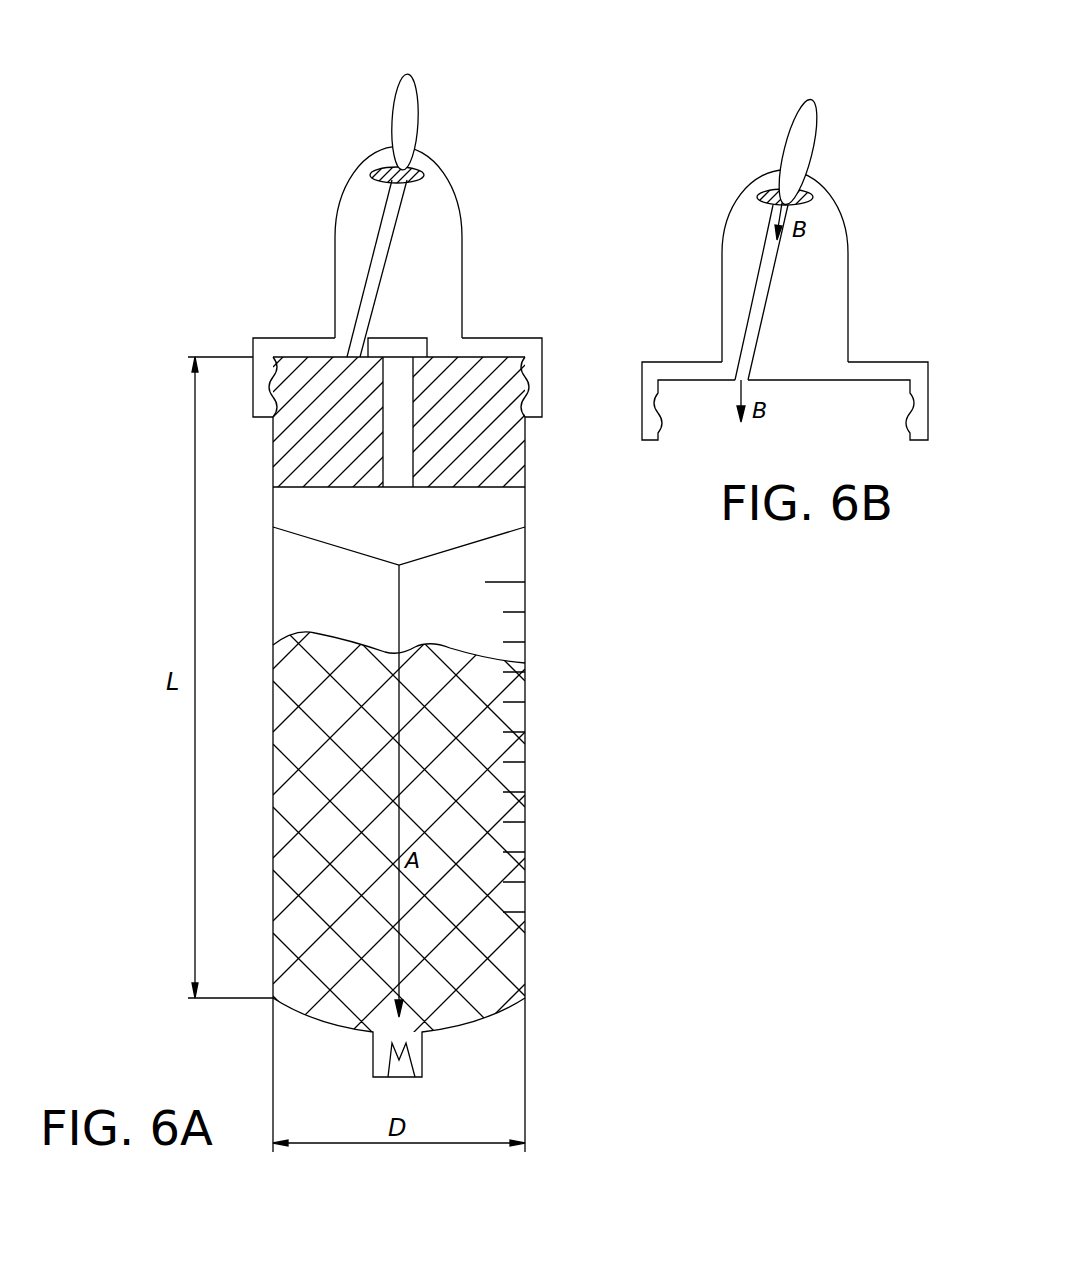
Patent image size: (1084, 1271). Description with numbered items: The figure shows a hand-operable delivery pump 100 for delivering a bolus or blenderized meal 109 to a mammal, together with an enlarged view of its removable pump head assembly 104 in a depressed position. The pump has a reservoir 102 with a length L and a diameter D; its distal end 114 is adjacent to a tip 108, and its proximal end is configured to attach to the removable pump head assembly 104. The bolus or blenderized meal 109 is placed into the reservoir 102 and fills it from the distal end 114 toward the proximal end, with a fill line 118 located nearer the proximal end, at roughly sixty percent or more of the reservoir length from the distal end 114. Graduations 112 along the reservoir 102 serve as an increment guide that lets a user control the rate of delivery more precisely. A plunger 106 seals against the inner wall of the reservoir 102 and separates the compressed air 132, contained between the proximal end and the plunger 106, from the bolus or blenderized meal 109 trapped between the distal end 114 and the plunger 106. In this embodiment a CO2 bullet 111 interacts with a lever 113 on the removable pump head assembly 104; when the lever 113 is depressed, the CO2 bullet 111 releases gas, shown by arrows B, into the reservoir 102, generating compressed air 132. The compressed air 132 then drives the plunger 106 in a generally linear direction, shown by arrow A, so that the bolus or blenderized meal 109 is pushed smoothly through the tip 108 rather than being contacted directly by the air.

In FIG. 6A, the delivery pump 100 is at (105, 345).
In FIG. 6A, the reservoir 102 is at (528, 782).
In FIG. 6A, the removable pump head assembly 104 is at (540, 86).
In FIG. 6B, the removable pump head assembly 104 is at (898, 142).
In FIG. 6A, the plunger 106 is at (510, 513).
In FIG. 6A, the tip 108 is at (397, 1050).
In FIG. 6A, the bolus or blenderized meal 109 is at (465, 698).
In FIG. 6A, the CO2 bullet 111 is at (427, 172).
In FIG. 6B, the CO2 bullet 111 is at (815, 193).
In FIG. 6A, the graduations 112 is at (515, 923).
In FIG. 6A, the lever 113 is at (405, 98).
In FIG. 6B, the lever 113 is at (805, 147).
In FIG. 6A, the distal end 114 is at (525, 1005).
In FIG. 6A, the fill line 118 is at (510, 577).
In FIG. 6A, the compressed air 132 is at (470, 433).